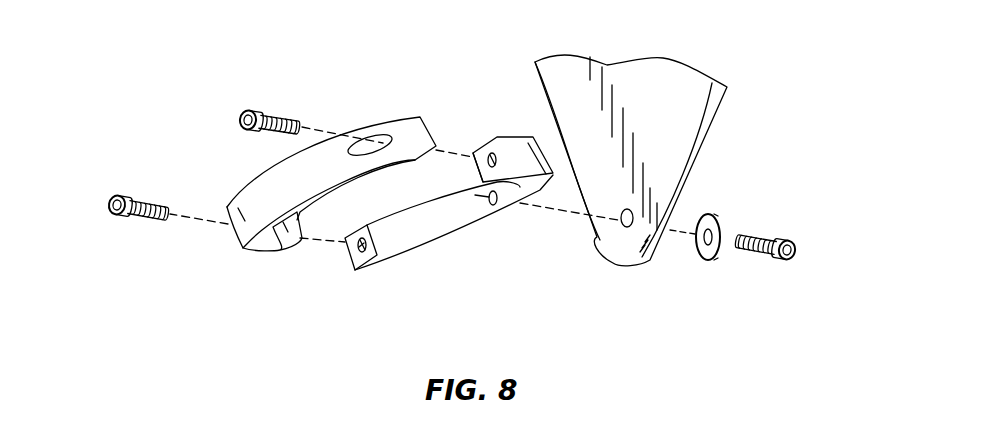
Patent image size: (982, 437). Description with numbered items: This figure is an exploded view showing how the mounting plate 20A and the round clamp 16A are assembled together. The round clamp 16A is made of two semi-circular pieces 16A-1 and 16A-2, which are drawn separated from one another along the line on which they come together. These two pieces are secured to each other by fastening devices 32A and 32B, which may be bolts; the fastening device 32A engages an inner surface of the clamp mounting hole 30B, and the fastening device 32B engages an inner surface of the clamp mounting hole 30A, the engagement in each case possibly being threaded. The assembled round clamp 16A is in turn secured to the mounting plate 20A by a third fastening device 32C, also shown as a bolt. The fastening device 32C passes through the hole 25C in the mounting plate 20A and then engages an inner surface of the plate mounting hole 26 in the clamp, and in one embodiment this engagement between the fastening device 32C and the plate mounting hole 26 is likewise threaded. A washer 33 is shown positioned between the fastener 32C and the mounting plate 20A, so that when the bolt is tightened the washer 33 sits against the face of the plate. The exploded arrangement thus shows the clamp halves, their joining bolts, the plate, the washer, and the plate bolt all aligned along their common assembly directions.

The round clamp 16A is at (517, 50).
The semi-circular piece 16A-1 is at (450, 243).
The semi-circular piece 16A-2 is at (243, 247).
The mounting plate 20A is at (720, 115).
The hole 25C is at (623, 230).
The plate mounting hole 26 is at (500, 205).
The clamp mounting hole 30A is at (487, 147).
The clamp mounting hole 30B is at (353, 260).
The fastening device 32A is at (117, 195).
The fastening device 32B is at (240, 112).
The fastening device 32C is at (785, 262).
The washer 33 is at (710, 262).